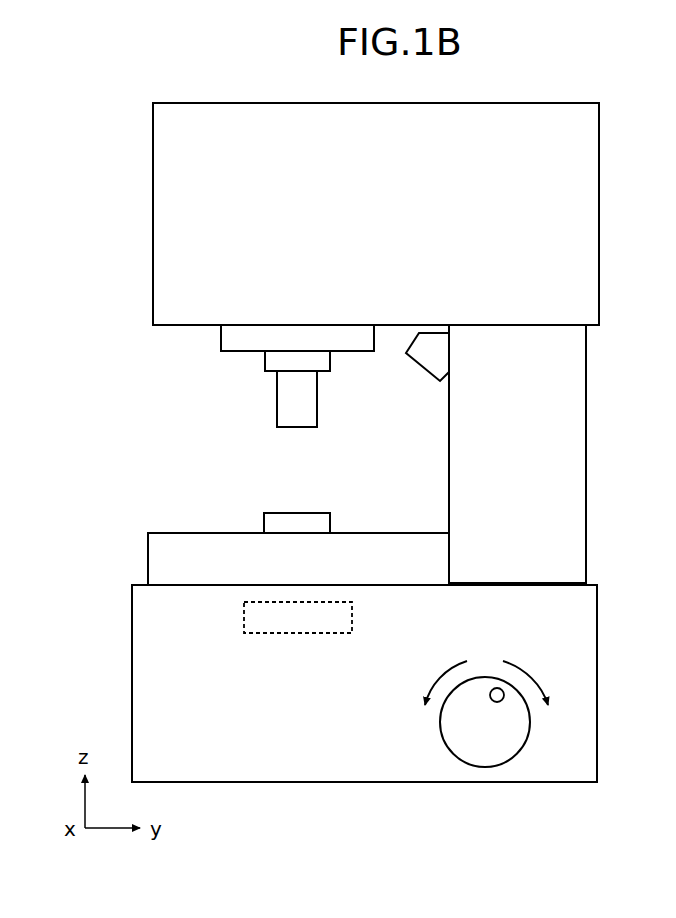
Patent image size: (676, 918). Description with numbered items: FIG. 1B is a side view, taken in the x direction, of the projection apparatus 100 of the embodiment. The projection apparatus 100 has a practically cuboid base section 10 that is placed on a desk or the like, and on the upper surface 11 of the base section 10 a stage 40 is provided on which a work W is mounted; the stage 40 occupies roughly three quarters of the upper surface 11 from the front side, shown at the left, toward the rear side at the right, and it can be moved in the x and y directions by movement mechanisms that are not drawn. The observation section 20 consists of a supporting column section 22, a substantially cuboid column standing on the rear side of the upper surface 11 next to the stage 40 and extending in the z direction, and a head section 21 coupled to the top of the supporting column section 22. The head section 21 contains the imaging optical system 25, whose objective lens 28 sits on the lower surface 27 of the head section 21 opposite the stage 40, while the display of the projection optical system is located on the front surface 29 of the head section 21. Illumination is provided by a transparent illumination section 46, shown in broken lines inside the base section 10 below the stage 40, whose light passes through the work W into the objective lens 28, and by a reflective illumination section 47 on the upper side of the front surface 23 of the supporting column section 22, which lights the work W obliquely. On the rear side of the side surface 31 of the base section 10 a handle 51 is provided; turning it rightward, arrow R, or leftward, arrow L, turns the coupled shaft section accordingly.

The projection apparatus 100 is at (500, 80).
The observation section 20 is at (217, 97).
The head section 21 is at (293, 118).
The front surface 29 is at (152, 207).
The lower surface 27 is at (177, 328).
The imaging optical system 25 is at (255, 390).
The objective lens 28 is at (285, 418).
The supporting column section 22 is at (562, 436).
The front surface 23 is at (448, 428).
The reflective illumination section 47 is at (428, 362).
The stage 40 is at (186, 532).
The work W is at (312, 512).
The upper surface 11 is at (160, 583).
The base section 10 is at (290, 752).
The side surface 31 is at (565, 610).
The transparent illumination section 46 is at (243, 617).
The handle 51 is at (486, 752).